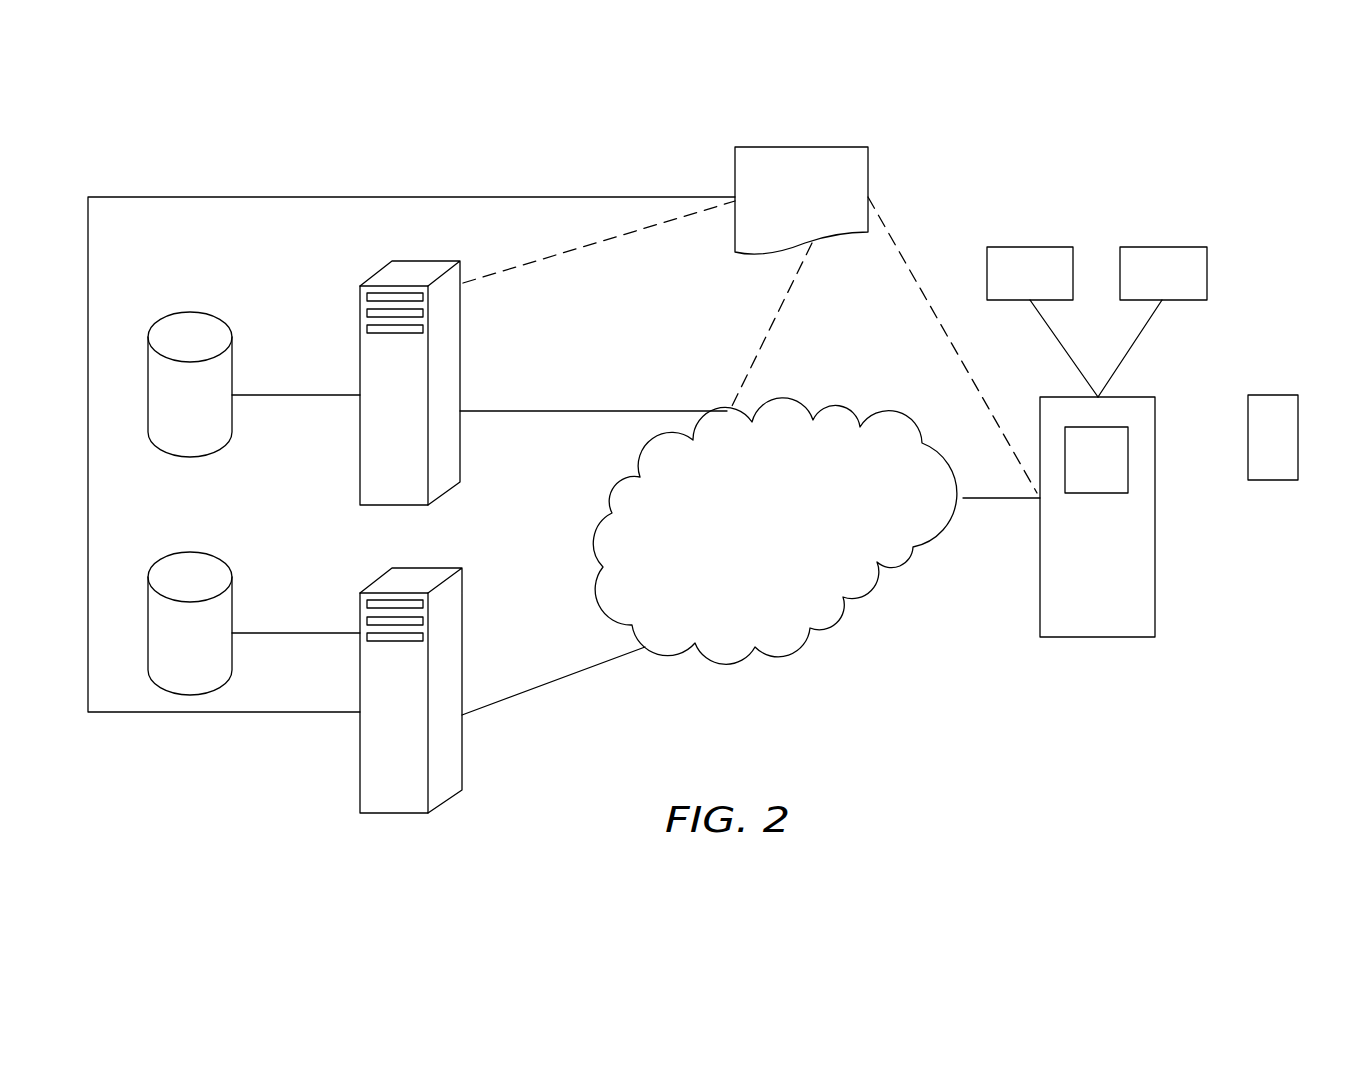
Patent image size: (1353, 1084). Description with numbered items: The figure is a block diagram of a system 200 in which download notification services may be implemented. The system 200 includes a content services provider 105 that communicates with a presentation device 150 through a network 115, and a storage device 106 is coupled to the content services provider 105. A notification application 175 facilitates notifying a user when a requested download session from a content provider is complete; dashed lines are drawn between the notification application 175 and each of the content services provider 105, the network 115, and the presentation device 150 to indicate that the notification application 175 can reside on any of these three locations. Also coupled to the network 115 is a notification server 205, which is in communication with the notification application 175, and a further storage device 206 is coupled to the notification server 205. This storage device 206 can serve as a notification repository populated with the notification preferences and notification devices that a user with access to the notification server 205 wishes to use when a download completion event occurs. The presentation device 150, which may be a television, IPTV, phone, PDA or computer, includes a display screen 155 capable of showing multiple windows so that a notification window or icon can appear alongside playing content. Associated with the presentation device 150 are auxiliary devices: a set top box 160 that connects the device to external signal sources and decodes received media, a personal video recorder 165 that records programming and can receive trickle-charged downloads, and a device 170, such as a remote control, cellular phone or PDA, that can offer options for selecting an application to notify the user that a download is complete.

The system 200 is at (422, 158).
The content services provider 105 is at (388, 265).
The storage device 106 is at (168, 313).
The notification server 205 is at (413, 817).
The storage device 206 is at (220, 562).
The notification application 175 is at (820, 199).
The network 115 is at (771, 520).
The presentation device 150 is at (1038, 607).
The display screen 155 is at (1120, 427).
The set top box 160 is at (1048, 289).
The personal video recorder 165 is at (1182, 289).
The device 170 is at (1277, 393).